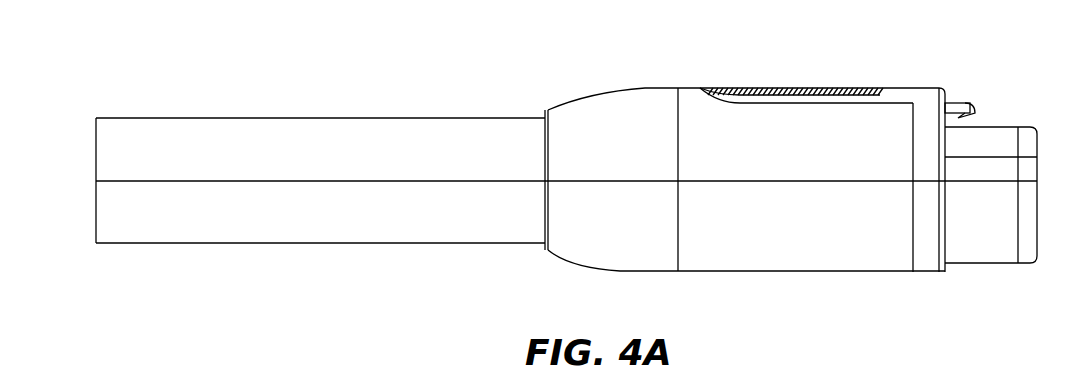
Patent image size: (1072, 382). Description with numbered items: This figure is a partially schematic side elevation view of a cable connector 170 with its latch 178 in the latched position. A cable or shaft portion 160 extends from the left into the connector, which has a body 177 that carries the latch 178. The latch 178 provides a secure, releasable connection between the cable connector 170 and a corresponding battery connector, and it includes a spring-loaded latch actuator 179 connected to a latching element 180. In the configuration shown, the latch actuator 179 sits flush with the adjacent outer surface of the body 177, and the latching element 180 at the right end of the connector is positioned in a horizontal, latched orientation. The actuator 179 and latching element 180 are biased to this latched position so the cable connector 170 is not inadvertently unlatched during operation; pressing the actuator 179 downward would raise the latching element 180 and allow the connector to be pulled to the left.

The shaft tube 160 is at (396, 118).
The cable connector 170 is at (640, 93).
The body 177 is at (913, 90).
The latch 178 is at (766, 73).
The latch actuator 179 is at (842, 92).
The latching element 180 is at (968, 110).